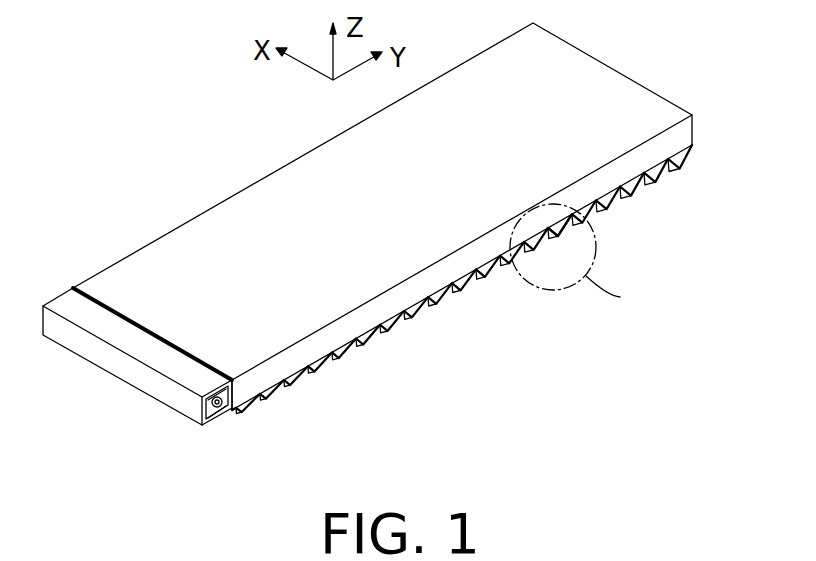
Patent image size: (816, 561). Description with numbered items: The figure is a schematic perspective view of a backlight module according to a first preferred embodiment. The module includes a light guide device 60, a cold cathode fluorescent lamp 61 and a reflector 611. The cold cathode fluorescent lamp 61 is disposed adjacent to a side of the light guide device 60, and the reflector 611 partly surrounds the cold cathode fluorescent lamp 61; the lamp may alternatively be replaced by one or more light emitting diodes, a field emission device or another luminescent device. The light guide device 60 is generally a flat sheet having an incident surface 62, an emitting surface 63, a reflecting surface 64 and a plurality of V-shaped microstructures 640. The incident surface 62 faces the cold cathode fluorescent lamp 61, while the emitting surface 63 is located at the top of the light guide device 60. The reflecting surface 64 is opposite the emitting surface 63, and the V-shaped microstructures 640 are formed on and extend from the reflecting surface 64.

The light guide device 60 is at (367, 241).
The emitting surface 63 is at (223, 240).
The reflector 611 is at (155, 402).
The cold cathode fluorescent lamp 61 is at (221, 420).
The incident surface 62 is at (237, 410).
The reflecting surface 64 is at (303, 370).
The V-shaped microstructures 640 is at (533, 252).